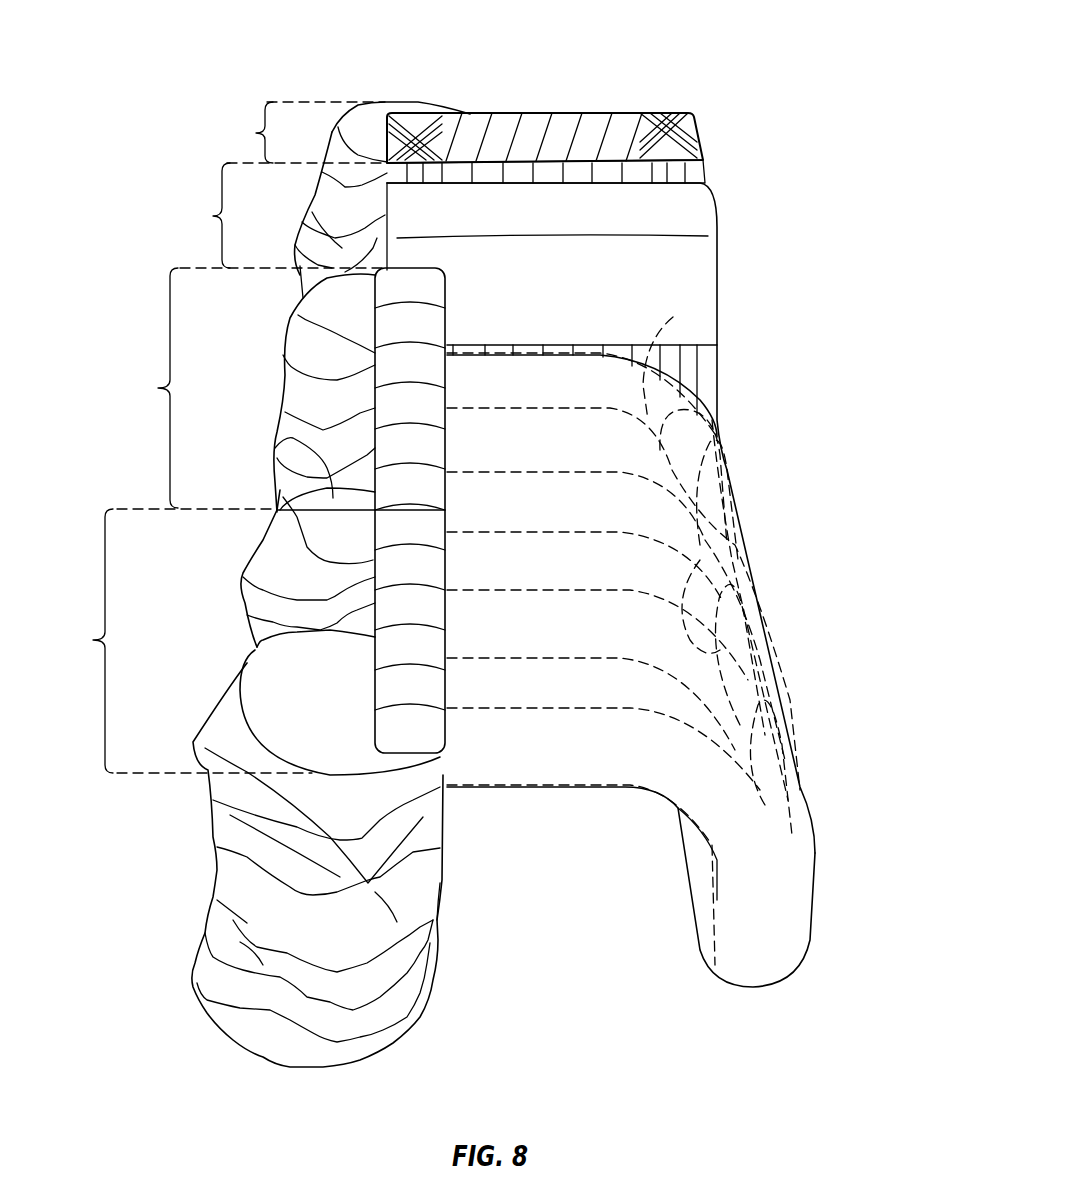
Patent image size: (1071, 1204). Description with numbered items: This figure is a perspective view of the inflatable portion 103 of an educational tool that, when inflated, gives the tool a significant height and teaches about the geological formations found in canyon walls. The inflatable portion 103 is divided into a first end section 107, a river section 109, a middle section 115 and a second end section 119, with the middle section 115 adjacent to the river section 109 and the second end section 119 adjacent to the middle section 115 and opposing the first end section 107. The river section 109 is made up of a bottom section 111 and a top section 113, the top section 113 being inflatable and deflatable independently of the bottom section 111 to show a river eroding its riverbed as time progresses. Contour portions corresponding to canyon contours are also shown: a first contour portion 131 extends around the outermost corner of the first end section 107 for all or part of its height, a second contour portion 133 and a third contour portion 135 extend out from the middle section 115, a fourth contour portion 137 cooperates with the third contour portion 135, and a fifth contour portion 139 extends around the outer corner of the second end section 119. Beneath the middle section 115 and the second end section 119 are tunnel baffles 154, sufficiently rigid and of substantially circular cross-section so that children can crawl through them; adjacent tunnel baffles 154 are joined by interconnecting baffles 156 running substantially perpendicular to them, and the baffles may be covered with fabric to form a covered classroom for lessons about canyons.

The inflatable portion 103 is at (766, 62).
The first end section 107 is at (298, 132).
The river section 109 is at (276, 215).
The bottom section 111 is at (717, 371).
The top section 113 is at (700, 204).
The middle section 115 is at (244, 388).
The second end section 119 is at (175, 641).
The first contour portion 131 is at (325, 212).
The second contour portion 133 is at (295, 356).
The third contour portion 135 is at (275, 432).
The fourth contour portion 137 is at (253, 600).
The fifth contour portion 139 is at (228, 867).
The tunnel baffle 154 is at (673, 317).
The interconnecting baffle 156 is at (716, 407).